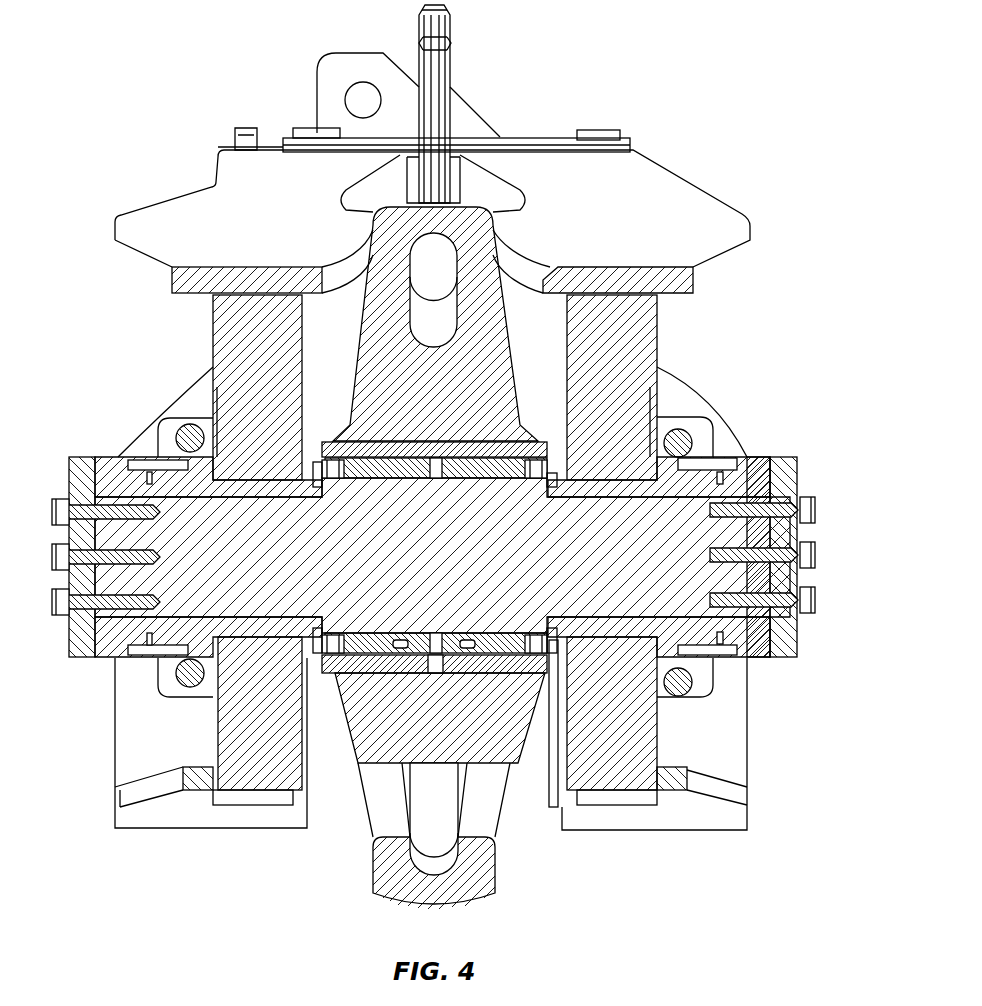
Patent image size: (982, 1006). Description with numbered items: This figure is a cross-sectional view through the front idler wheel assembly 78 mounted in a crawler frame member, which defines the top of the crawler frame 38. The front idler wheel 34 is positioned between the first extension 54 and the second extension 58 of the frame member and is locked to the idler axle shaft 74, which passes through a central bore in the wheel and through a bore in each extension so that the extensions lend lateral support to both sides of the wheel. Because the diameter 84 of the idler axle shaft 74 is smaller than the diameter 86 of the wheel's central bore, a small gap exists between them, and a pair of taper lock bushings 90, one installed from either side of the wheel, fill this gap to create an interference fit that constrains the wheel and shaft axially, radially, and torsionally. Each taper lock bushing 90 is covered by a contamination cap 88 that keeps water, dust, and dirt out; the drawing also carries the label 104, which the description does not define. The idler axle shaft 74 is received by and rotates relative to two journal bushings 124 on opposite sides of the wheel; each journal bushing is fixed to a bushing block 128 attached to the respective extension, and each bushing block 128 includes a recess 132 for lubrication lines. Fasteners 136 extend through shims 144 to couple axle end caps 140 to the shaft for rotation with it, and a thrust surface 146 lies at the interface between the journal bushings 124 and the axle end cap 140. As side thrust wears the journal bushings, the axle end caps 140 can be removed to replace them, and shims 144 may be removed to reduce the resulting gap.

The front idler wheel assembly 78 is at (160, 138).
The top of the crawler frame 38 is at (270, 197).
The diameter of the central bore 86 is at (463, 443).
The front idler wheel 34 is at (497, 373).
The second extension 58 is at (240, 352).
The first extension 54 is at (627, 327).
The idler axle shaft 74 is at (222, 528).
The recess 132 is at (723, 463).
The thrust surface 146 is at (768, 445).
The fasteners 136 is at (813, 502).
The shims 144 is at (802, 603).
The axle end caps 140 is at (783, 643).
The journal bushings 124 is at (757, 640).
The bushing block 128 is at (664, 642).
The contamination cap 88 is at (303, 653).
The lower bearing 104 is at (365, 645).
The taper lock bushing 90 is at (405, 715).
The diameter of the idler axle shaft 84 is at (500, 640).